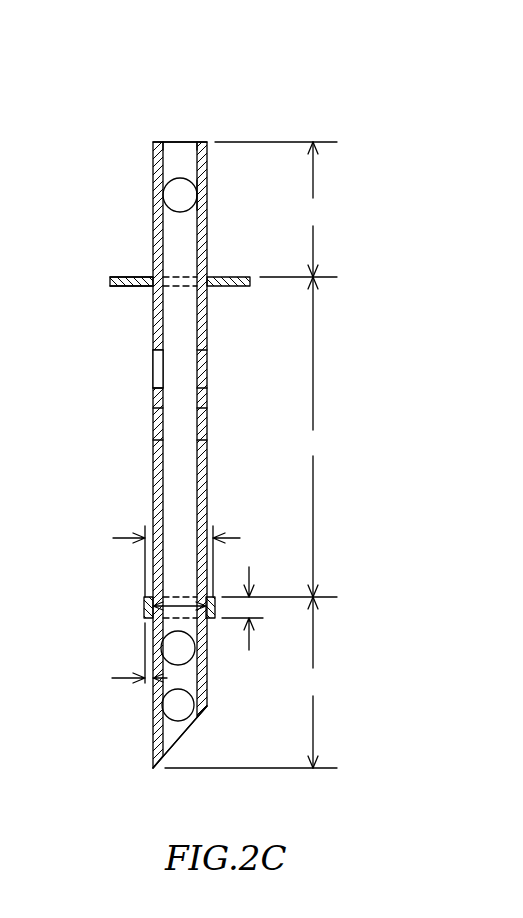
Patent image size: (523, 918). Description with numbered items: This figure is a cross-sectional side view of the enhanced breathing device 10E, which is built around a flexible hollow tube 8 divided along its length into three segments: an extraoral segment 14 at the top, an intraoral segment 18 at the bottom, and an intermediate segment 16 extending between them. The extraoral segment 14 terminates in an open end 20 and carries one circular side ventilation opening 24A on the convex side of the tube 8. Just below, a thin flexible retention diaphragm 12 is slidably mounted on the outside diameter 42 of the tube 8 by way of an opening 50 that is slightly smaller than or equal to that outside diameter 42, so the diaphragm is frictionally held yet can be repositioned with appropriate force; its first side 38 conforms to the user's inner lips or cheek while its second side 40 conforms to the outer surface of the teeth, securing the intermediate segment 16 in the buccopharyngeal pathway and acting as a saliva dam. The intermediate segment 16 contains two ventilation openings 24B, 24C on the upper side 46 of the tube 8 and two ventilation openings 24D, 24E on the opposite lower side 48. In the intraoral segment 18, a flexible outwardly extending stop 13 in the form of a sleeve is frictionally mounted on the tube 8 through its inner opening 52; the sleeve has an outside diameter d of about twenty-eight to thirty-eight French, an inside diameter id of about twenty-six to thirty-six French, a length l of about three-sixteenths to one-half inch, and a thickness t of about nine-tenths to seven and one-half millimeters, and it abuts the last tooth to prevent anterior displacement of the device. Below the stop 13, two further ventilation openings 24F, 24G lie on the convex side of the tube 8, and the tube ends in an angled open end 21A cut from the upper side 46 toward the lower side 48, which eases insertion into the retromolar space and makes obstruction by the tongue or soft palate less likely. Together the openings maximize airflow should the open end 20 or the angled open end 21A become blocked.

The enhanced breathing device 10E is at (376, 134).
The flexible hollow tube 8 is at (142, 481).
The open end 20 is at (167, 142).
The ventilation opening 24A is at (182, 178).
The outside diameter 42 is at (207, 193).
The opening 50 is at (176, 272).
The retention diaphragm 12 is at (110, 282).
The first side 38 is at (118, 277).
The second side 40 is at (128, 287).
The upper side 46 is at (153, 323).
The lower side 48 is at (207, 323).
The ventilation opening 24B is at (153, 380).
The ventilation opening 24C is at (153, 430).
The ventilation opening 24D is at (207, 370).
The ventilation opening 24E is at (207, 420).
The inner opening 52 is at (175, 597).
The stop 13 is at (144, 603).
The ventilation opening 24F is at (177, 648).
The ventilation opening 24G is at (177, 705).
The angled open end 21A is at (177, 741).
The extraoral segment 14 is at (276, 215).
The intermediate segment 16 is at (279, 443).
The intraoral segment 18 is at (251, 682).
The outside diameter d is at (162, 561).
The length l is at (244, 603).
The thickness t is at (127, 658).
The inside diameter id is at (180, 610).